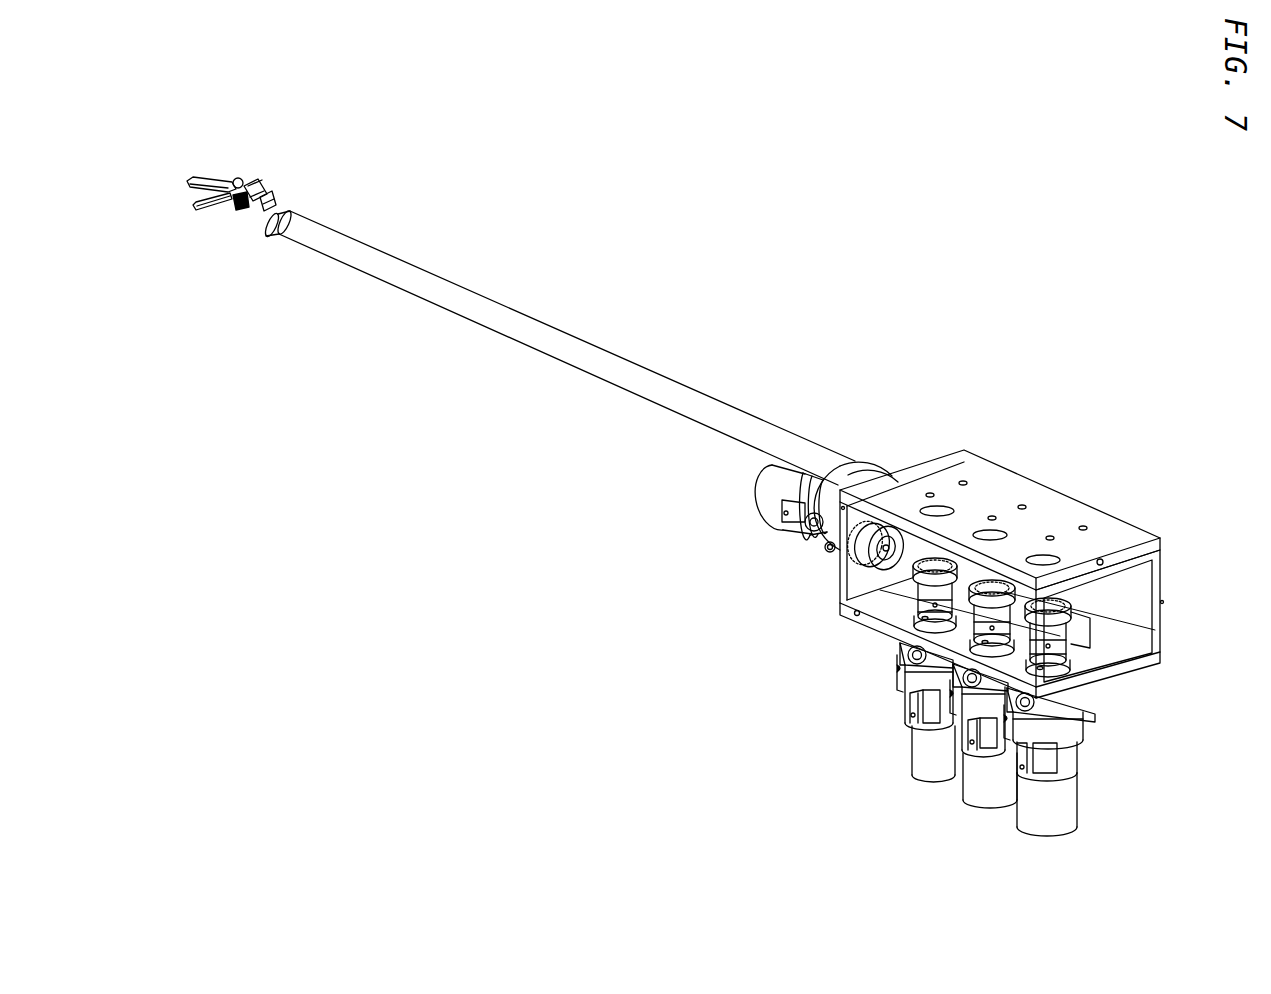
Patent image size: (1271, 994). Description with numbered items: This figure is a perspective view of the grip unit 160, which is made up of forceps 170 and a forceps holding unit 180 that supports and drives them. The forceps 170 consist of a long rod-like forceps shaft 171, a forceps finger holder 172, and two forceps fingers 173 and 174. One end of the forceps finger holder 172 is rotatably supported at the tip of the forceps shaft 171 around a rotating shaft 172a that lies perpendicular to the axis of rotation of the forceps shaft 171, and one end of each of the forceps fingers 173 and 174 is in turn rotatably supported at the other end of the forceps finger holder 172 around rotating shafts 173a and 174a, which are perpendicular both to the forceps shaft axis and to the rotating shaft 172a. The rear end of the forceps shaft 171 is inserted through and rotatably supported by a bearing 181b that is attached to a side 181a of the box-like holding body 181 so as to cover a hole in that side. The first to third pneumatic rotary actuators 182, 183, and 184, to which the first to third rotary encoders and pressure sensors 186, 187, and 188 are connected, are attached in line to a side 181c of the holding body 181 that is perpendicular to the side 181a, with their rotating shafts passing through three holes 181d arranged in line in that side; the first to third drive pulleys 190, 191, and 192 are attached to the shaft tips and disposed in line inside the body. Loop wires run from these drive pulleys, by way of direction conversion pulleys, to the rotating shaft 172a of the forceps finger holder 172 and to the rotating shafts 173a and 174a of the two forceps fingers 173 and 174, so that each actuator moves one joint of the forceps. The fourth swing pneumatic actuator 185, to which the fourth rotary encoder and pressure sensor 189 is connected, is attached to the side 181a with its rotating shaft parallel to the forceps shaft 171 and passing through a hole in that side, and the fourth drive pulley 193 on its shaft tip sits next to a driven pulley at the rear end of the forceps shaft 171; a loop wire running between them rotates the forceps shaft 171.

The grip unit 160 is at (544, 180).
The forceps 170 is at (393, 189).
The forceps shaft 171 is at (338, 232).
The forceps finger holder 172 is at (249, 190).
The rotating shaft 172a is at (264, 200).
The forceps finger 173 is at (218, 208).
The rotating shaft 173a is at (236, 212).
The forceps finger 174 is at (200, 184).
The rotating shaft 174a is at (239, 178).
The forceps holding unit 180 is at (1028, 431).
The holding body 181 is at (968, 475).
The side 181a is at (856, 582).
The bearing 181b is at (898, 462).
The side 181c is at (1112, 657).
The holes 181d is at (1052, 668).
The first pneumatic rotary actuator 182 is at (915, 677).
The second pneumatic rotary actuator 183 is at (972, 697).
The third pneumatic rotary actuator 184 is at (1030, 718).
The fourth swing pneumatic actuator 185 is at (822, 540).
The first rotary encoder and pressure sensor 186 is at (930, 766).
The second rotary encoder and pressure sensor 187 is at (990, 787).
The third rotary encoder and pressure sensor 188 is at (1035, 808).
The fourth rotary encoder and pressure sensor 189 is at (765, 508).
The first drive pulley 190 is at (940, 574).
The second drive pulley 191 is at (992, 588).
The third drive pulley 192 is at (1048, 604).
The fourth drive pulley 193 is at (852, 565).